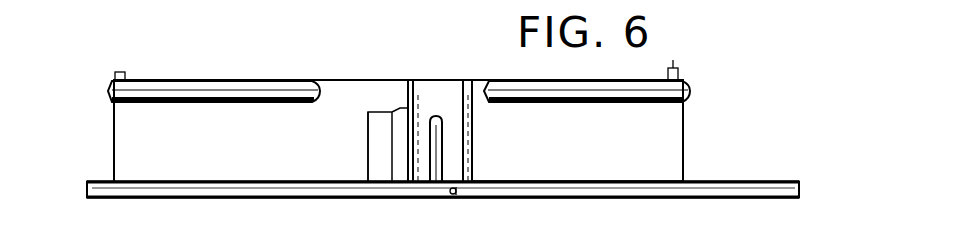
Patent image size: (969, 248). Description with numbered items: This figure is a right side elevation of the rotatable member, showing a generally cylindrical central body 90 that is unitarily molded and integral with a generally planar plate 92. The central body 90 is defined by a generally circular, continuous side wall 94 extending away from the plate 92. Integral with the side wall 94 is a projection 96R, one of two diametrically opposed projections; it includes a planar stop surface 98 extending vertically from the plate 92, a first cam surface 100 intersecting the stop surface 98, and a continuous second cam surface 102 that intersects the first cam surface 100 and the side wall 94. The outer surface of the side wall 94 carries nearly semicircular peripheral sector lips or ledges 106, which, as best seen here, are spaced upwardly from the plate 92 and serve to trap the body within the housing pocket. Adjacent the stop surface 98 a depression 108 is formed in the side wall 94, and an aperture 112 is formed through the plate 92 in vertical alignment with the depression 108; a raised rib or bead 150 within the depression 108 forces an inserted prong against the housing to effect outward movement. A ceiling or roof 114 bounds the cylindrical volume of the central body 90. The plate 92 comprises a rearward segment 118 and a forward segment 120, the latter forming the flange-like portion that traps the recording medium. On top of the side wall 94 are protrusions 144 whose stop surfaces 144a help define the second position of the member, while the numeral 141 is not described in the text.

The cylindrical central body 90 is at (698, 123).
The plate 92 is at (754, 163).
The side wall 94 is at (673, 113).
The projection 96R is at (358, 149).
The stop surface 98 is at (418, 184).
The first cam surface 100 is at (440, 134).
The second cam surface 102 is at (398, 135).
The peripheral sector lips or ledges 106 is at (260, 98).
The depression 108 is at (463, 80).
The aperture 112 is at (440, 200).
The ceiling or roof 114 is at (493, 165).
The rearward segment 118 is at (100, 190).
The forward segment 120 is at (797, 181).
The pin 141 is at (682, 45).
The protrusion 144 is at (137, 43).
The stop surface 144a is at (681, 78).
The raised rib or bead 150 is at (442, 133).